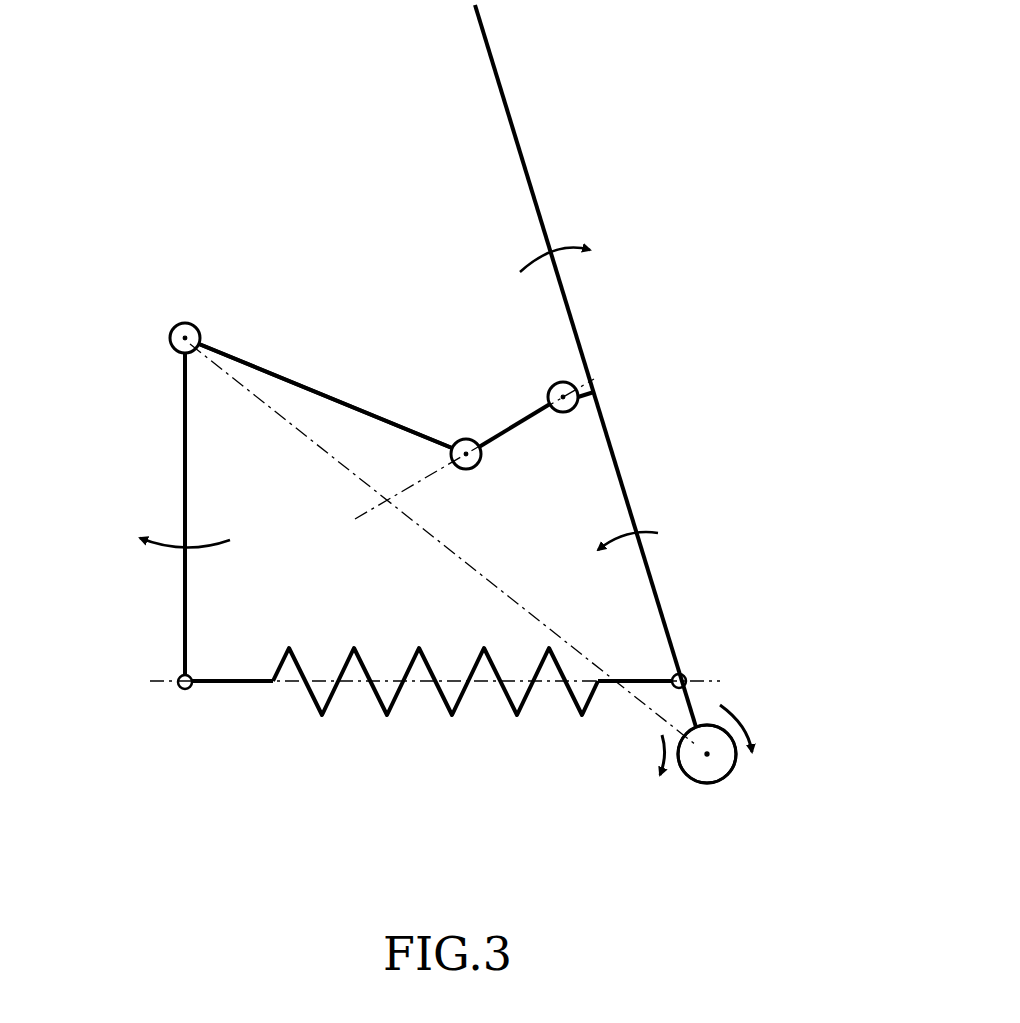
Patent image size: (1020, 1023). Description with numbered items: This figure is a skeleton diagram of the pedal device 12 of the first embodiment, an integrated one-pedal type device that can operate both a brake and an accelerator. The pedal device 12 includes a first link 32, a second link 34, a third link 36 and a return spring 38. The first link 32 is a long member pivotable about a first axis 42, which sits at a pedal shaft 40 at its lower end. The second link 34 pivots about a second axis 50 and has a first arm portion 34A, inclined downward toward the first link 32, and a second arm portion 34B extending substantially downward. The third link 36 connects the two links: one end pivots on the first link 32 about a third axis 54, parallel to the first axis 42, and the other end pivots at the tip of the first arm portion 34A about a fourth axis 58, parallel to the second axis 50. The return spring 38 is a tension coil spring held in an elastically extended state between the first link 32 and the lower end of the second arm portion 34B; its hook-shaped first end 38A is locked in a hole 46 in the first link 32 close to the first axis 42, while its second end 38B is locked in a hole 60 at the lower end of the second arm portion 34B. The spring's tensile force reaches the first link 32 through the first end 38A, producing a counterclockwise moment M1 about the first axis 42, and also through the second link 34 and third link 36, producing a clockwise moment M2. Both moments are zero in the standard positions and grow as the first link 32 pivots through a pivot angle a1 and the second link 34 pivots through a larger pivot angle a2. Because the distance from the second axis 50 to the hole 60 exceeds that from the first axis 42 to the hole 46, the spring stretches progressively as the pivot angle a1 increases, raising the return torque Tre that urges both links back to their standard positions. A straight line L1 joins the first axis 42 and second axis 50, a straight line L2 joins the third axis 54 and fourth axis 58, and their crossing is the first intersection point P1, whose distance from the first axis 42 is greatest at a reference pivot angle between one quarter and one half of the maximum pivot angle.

The pedal device 12 is at (219, 83).
The first link 32 is at (522, 150).
The second link 34 is at (165, 430).
The first arm portion 34A is at (342, 390).
The second arm portion 34B is at (187, 466).
The third link 36 is at (510, 423).
The return spring 38 is at (312, 668).
The first end 38A is at (685, 668).
The second end 38B is at (182, 676).
The pedal shaft 40 is at (697, 783).
The first axis 42 is at (707, 754).
The hole 46 is at (672, 678).
The second axis 50 is at (185, 335).
The third axis 54 is at (578, 398).
The fourth axis 58 is at (466, 470).
The hole 60 is at (185, 690).
The straight line L1 is at (473, 582).
The straight line L2 is at (355, 507).
The first intersection point P1 is at (388, 505).
The return torque Tre is at (578, 254).
The pivot angle a1 is at (606, 540).
The pivot angle a2 is at (155, 539).
The moment M1 is at (632, 756).
The moment M2 is at (754, 725).